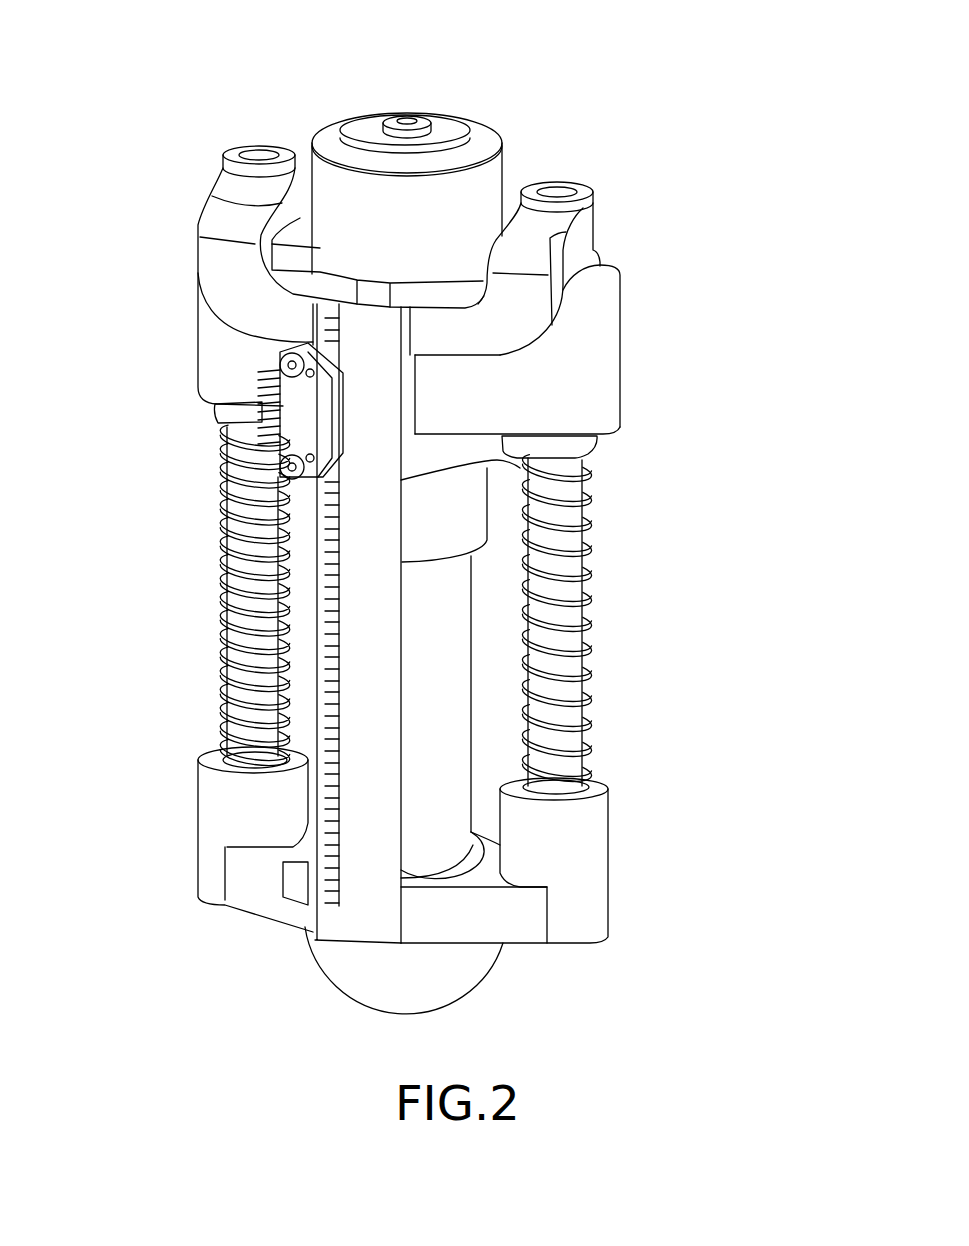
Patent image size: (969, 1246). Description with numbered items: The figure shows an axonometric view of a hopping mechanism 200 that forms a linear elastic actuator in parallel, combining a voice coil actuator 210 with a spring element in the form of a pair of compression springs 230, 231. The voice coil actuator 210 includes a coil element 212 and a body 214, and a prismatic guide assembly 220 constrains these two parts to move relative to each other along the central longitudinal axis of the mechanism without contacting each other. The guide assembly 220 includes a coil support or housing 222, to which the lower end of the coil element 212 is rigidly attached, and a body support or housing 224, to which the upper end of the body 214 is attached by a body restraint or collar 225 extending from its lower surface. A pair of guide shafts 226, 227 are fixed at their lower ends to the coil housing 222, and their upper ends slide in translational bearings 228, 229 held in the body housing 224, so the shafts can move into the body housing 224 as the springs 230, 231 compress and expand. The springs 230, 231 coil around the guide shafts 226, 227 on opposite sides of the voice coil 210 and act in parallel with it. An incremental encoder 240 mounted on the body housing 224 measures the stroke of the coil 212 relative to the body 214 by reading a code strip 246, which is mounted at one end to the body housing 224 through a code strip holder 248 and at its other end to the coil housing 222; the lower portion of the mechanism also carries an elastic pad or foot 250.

The hopping mechanism 200 is at (592, 64).
The voice coil actuator 210 is at (498, 611).
The coil element 212 is at (471, 753).
The body 214 is at (487, 522).
The prismatic guide assembly 220 is at (142, 280).
The coil support or housing 222 is at (610, 843).
The body support or housing 224 is at (622, 349).
The body restraint or collar 225 is at (583, 470).
The guide shaft 226 is at (580, 668).
The guide shaft 227 is at (200, 632).
The translational bearing 228 is at (599, 440).
The translational bearing 229 is at (215, 404).
The compression spring 230 is at (615, 704).
The compression spring 231 is at (222, 571).
The incremental encoder 240 is at (222, 451).
The code strip 246 is at (316, 698).
The code strip holder 248 is at (597, 219).
The ball 250 is at (305, 950).